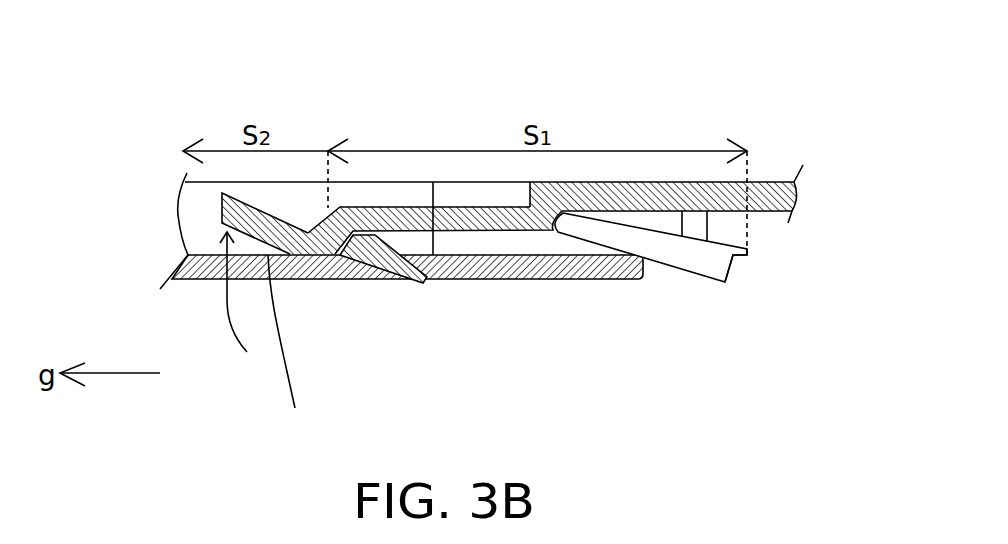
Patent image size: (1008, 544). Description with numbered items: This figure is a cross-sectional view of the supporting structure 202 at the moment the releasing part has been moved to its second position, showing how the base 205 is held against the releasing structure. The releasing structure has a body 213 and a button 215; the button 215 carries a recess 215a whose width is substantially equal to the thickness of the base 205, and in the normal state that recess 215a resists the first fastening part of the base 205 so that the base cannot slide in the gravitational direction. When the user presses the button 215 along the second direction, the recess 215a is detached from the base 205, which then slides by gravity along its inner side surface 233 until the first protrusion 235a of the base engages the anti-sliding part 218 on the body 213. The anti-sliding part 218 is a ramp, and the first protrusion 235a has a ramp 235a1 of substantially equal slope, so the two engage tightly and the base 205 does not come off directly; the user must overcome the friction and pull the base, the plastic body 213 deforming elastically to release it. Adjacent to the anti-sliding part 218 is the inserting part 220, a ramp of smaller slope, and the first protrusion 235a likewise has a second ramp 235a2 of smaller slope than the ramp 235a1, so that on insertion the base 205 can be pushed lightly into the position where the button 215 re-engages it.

The connector assembly 202 is at (828, 39).
The body 213 is at (782, 182).
The button 215 is at (715, 268).
The recess 215a is at (733, 268).
The anti-sliding part 218 is at (294, 351).
The inserting part 220 is at (246, 311).
The inner side surface 233 is at (207, 233).
The first protrusion 235a is at (367, 258).
The ramp 235a1 is at (337, 255).
The ramp 235a2 is at (405, 247).
The base 205 is at (617, 279).